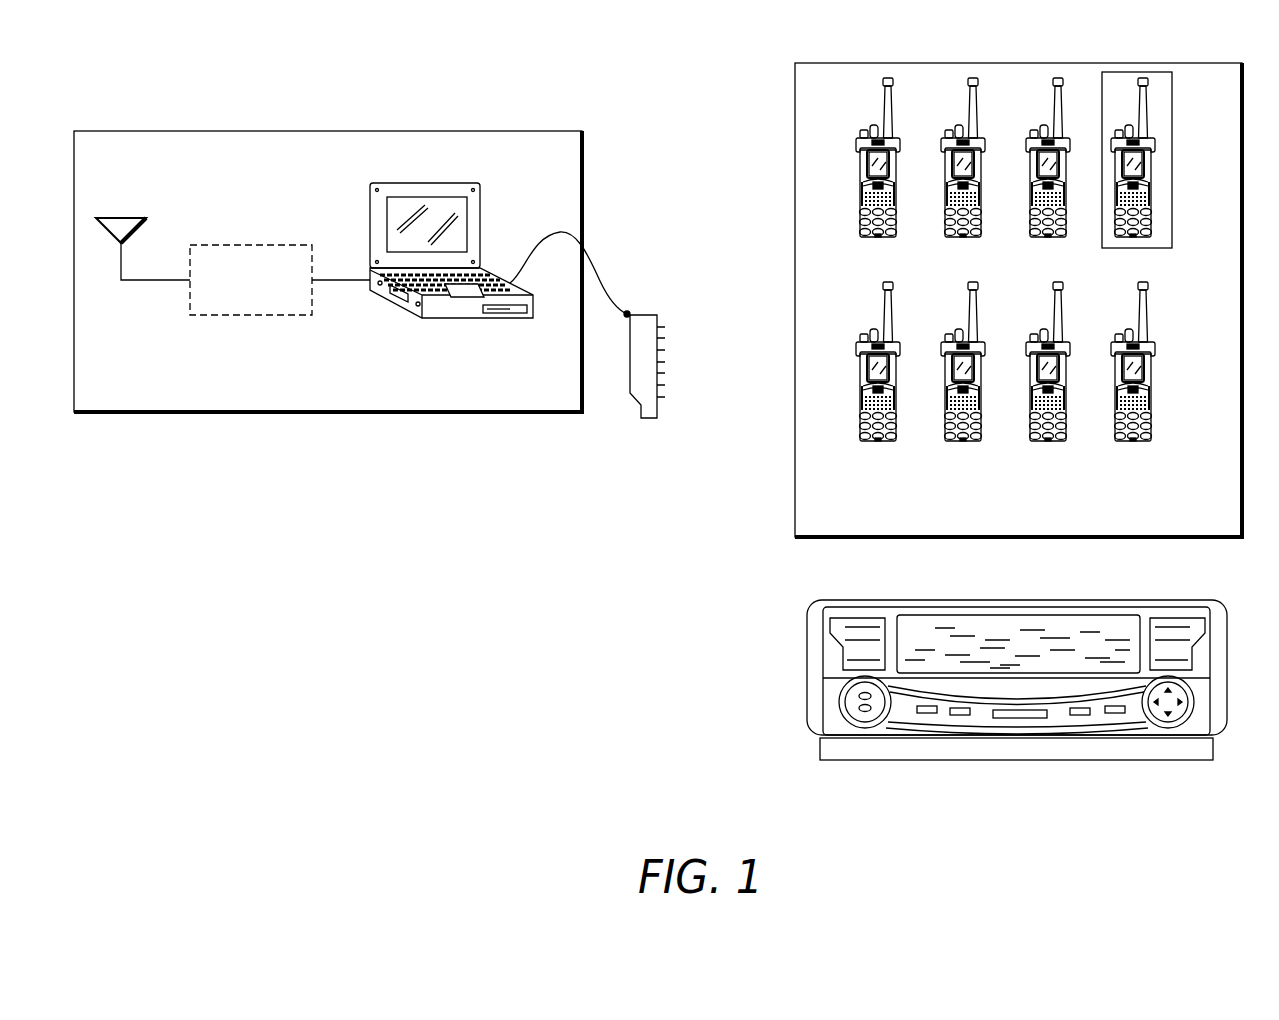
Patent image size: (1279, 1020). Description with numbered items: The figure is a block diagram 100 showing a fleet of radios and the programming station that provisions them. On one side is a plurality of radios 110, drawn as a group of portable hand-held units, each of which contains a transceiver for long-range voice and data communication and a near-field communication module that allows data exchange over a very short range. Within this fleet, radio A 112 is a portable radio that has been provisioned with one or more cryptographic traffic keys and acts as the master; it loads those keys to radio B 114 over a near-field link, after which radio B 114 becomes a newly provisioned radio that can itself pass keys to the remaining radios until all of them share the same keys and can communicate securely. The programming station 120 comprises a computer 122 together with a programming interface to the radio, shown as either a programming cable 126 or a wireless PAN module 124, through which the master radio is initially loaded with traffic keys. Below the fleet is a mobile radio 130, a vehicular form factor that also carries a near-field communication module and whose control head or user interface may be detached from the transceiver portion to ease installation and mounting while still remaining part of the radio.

The block diagram 100 is at (622, 636).
The plurality of radios 110 is at (1226, 63).
The radio A 112 is at (1155, 196).
The radio B 114 is at (1155, 398).
The programming station 120 is at (565, 131).
The computer 122 is at (470, 185).
The PAN module 124 is at (300, 247).
The programming cable 126 is at (643, 313).
The mobile radio 130 is at (806, 665).